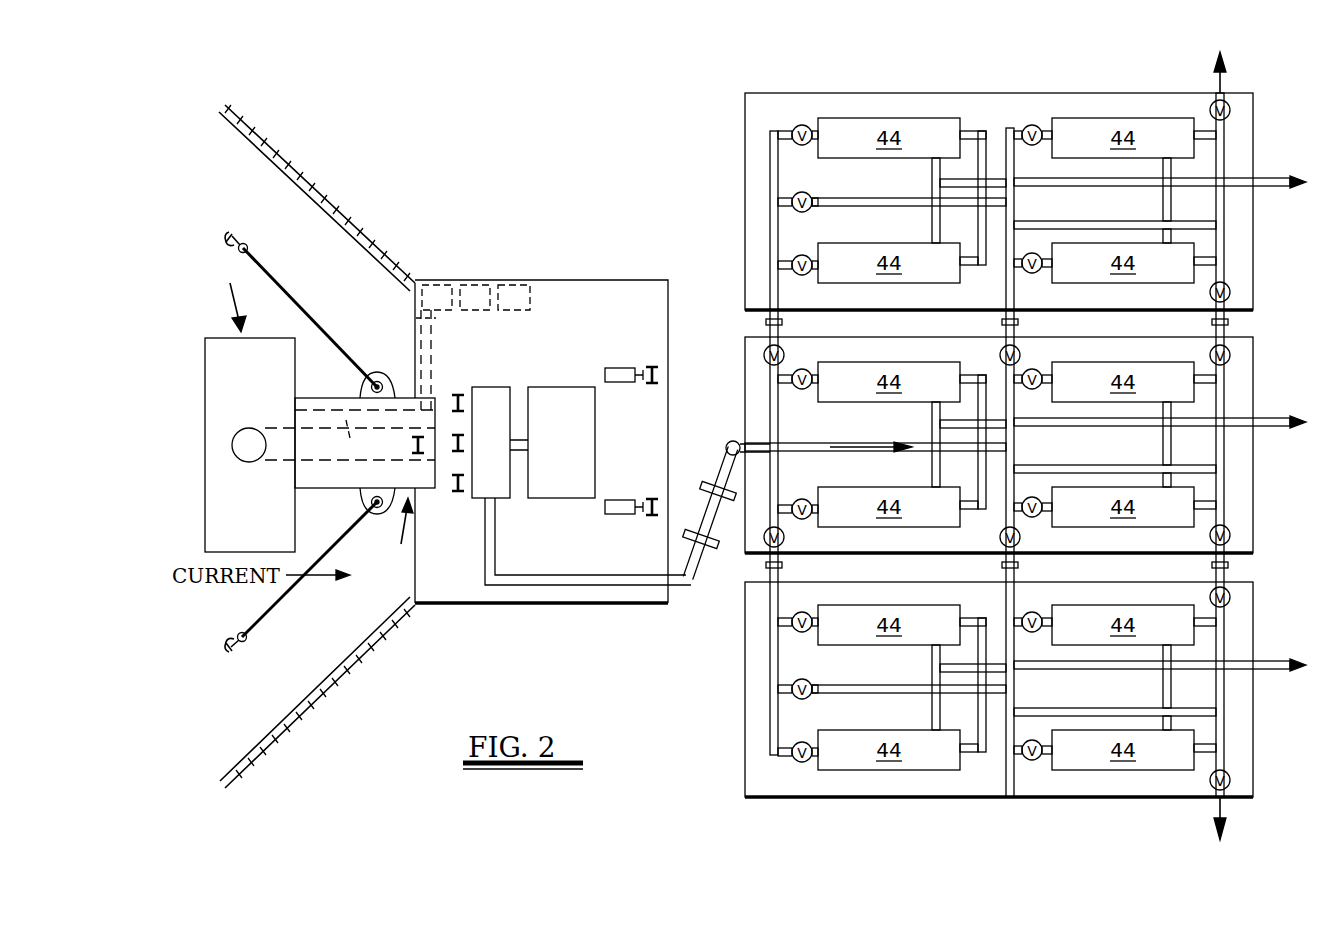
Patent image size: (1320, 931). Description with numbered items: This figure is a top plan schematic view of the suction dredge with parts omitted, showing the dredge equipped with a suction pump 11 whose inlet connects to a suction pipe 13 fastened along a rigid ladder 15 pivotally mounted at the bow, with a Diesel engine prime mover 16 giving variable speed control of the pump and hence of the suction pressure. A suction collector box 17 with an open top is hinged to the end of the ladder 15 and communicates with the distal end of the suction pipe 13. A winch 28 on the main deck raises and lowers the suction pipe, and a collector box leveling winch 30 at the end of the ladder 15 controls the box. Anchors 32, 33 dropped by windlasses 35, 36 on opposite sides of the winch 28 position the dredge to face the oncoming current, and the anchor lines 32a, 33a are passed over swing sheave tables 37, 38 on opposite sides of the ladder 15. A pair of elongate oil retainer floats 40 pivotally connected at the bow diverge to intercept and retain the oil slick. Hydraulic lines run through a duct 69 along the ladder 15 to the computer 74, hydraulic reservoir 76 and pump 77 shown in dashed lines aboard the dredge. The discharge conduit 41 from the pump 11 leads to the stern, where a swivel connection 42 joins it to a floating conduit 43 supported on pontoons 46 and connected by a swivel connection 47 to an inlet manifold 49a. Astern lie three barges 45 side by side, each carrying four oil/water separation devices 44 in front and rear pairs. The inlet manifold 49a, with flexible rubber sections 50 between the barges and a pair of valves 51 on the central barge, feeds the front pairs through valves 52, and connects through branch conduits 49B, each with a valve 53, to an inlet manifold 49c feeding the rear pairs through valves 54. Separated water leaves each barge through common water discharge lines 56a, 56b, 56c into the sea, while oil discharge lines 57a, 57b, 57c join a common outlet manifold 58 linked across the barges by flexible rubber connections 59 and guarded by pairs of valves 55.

The suction pump 11 is at (492, 390).
The suction pipe 13 is at (350, 410).
The rigid ladder 15 is at (390, 530).
The Diesel engine prime mover 16 is at (575, 456).
The suction collector box 17 is at (250, 404).
The winch 28 is at (448, 455).
The collector box leveling winch 30 is at (428, 460).
The anchor 32 is at (218, 240).
The anchor line 32a is at (272, 282).
The anchor 33 is at (244, 650).
The anchor line 33a is at (305, 577).
The windlass 35 is at (457, 392).
The windlass 36 is at (463, 495).
The swing sheave table 37 is at (378, 375).
The swing sheave table 38 is at (370, 500).
The oil retainer float 40 is at (302, 156).
The discharge conduit 41 is at (587, 600).
The swivel connection 42 is at (686, 574).
The floating conduit 43 is at (675, 553).
The oil/water separation device 44 is at (1006, 444).
The barge 45 is at (1268, 248).
The pontoon 46 is at (705, 480).
The swivel connection 47 is at (733, 440).
The inlet manifold 49a is at (755, 372).
The branch conduit 49B is at (905, 198).
The inlet manifold 49c is at (1015, 447).
The flexible rubber section 50 is at (784, 322).
The valve 51 is at (764, 345).
The valve 52 is at (792, 130).
The valve 53 is at (792, 200).
The valve 54 is at (1032, 124).
The valve 55 is at (1228, 104).
The water discharge line 56a is at (1236, 176).
The water discharge line 56b is at (1236, 418).
The water discharge line 56c is at (1238, 661).
The oil discharge line 57a is at (1140, 221).
The oil discharge line 57b is at (1190, 465).
The oil discharge line 57c is at (1125, 708).
The outlet manifold 58 is at (1252, 396).
The flexible rubber connection 59 is at (1228, 322).
The duct 69 is at (420, 320).
The computer 74 is at (438, 285).
The hydraulic reservoir 76 is at (510, 285).
The pump 77 is at (473, 285).